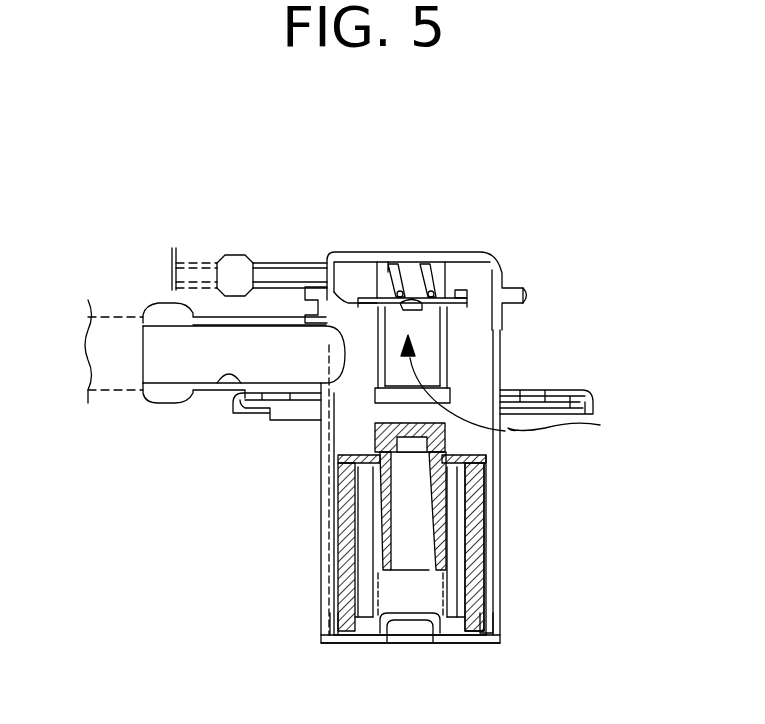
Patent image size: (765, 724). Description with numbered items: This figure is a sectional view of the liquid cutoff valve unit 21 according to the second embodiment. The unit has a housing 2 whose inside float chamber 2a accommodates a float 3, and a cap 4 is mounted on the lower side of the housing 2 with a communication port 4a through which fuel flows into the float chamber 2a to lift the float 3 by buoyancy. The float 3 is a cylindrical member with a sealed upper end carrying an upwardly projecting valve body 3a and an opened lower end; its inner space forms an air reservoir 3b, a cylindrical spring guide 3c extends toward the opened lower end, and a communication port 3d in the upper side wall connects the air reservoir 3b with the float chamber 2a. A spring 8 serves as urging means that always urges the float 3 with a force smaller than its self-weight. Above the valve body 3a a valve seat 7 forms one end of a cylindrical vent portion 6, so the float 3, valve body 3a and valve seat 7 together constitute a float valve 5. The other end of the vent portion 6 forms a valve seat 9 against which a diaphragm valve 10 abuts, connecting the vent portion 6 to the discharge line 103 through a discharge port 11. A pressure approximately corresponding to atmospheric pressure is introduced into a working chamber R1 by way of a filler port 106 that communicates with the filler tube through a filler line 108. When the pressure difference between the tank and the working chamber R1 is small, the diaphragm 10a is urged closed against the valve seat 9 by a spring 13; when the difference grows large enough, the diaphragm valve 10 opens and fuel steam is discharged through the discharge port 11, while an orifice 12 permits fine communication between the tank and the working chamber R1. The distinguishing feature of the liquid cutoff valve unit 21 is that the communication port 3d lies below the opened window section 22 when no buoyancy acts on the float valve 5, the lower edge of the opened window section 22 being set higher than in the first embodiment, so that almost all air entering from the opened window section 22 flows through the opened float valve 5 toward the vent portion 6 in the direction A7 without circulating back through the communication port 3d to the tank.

The housing 2 is at (500, 536).
The float chamber 2a is at (492, 590).
The float 3 is at (480, 498).
The valve body 3a is at (445, 430).
The air reservoir 3b is at (466, 565).
The spring guide 3c is at (372, 523).
The communication port 3d is at (468, 482).
The cap 4 is at (474, 645).
The communication port 4a is at (351, 645).
The float valve 5 is at (378, 413).
The vent portion 6 is at (436, 360).
The valve seat 7 is at (447, 392).
The spring 8 is at (372, 584).
The valve seat 9 is at (455, 297).
The diaphragm valve 10 is at (464, 284).
The diaphragm 10a is at (452, 292).
The discharge port 11 is at (227, 372).
The orifice 12 is at (424, 265).
The spring 13 is at (418, 266).
The liquid cutoff valve unit 21 is at (422, 168).
The opened window section 22 is at (500, 446).
The direction of air flow A7 is at (600, 424).
The working chamber R1 is at (353, 286).
The discharge line 103 is at (100, 310).
The filler port 106 is at (273, 263).
The filler line 108 is at (187, 248).